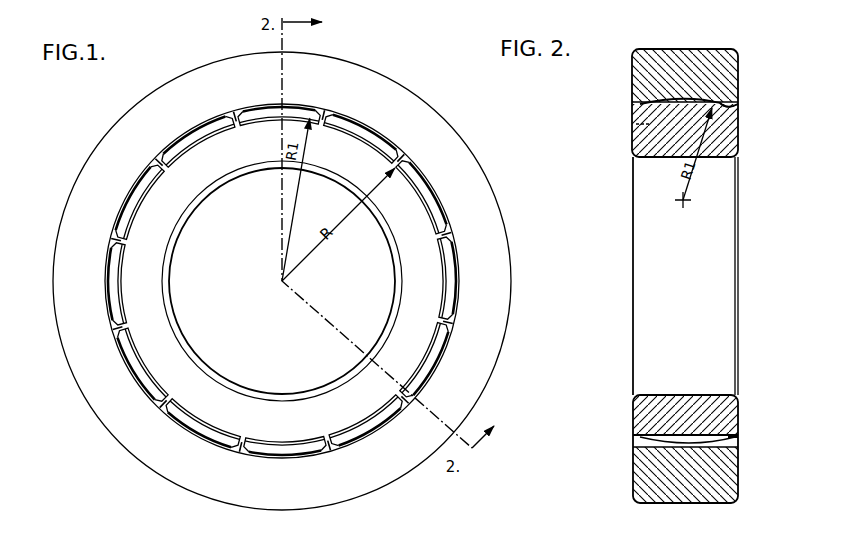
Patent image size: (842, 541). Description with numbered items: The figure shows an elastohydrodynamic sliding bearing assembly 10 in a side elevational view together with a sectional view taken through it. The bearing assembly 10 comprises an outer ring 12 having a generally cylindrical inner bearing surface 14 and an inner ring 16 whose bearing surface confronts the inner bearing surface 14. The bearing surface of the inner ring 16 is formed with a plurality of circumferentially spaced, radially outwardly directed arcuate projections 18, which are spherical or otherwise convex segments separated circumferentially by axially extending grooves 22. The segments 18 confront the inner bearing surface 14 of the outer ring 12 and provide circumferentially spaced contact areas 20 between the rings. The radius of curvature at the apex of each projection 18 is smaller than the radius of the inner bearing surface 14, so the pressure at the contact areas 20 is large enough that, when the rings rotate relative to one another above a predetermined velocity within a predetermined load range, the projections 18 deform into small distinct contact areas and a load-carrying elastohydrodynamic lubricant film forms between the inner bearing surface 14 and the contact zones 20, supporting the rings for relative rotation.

In FIG. 1, the bearing assembly 10 is at (115, 126).
In FIG. 2, the bearing assembly 10 is at (742, 68).
In FIG. 1, the outer ring 12 is at (380, 86).
In FIG. 2, the outer ring 12 is at (672, 50).
In FIG. 2, the inner bearing surface 14 is at (728, 106).
In FIG. 1, the inner ring 16 is at (162, 272).
In FIG. 2, the inner ring 16 is at (686, 395).
In FIG. 1, the arcuate projections 18 is at (338, 106).
In FIG. 2, the arcuate projections 18 is at (660, 104).
In FIG. 1, the contact areas 20 is at (458, 282).
In FIG. 2, the contact areas 20 is at (668, 97).
In FIG. 1, the axially extending grooves 22 is at (233, 111).
In FIG. 2, the axially extending grooves 22 is at (640, 123).